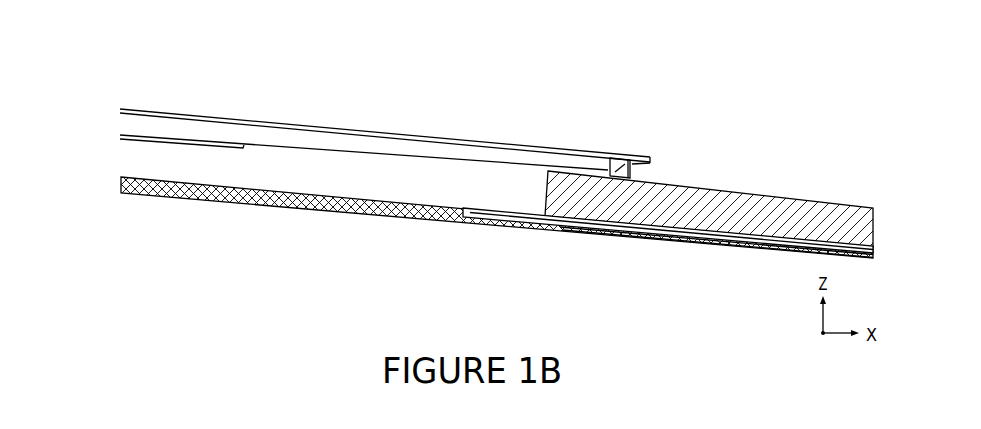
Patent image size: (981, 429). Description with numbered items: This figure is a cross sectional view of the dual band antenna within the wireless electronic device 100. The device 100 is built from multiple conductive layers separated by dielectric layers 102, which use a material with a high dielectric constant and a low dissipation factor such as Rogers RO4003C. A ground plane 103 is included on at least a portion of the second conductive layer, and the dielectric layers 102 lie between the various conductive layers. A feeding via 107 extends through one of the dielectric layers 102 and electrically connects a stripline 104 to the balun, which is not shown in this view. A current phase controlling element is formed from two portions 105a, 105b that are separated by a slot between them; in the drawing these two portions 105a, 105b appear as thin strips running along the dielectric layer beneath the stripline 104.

The sensor assembly 100 is at (684, 86).
The substrate 102 is at (648, 203).
The flexible sheet edge 103 is at (143, 135).
The top plate 104 is at (482, 140).
The first electrode 105a is at (588, 228).
The second electrode 105b is at (668, 238).
The spacer 107 is at (651, 161).